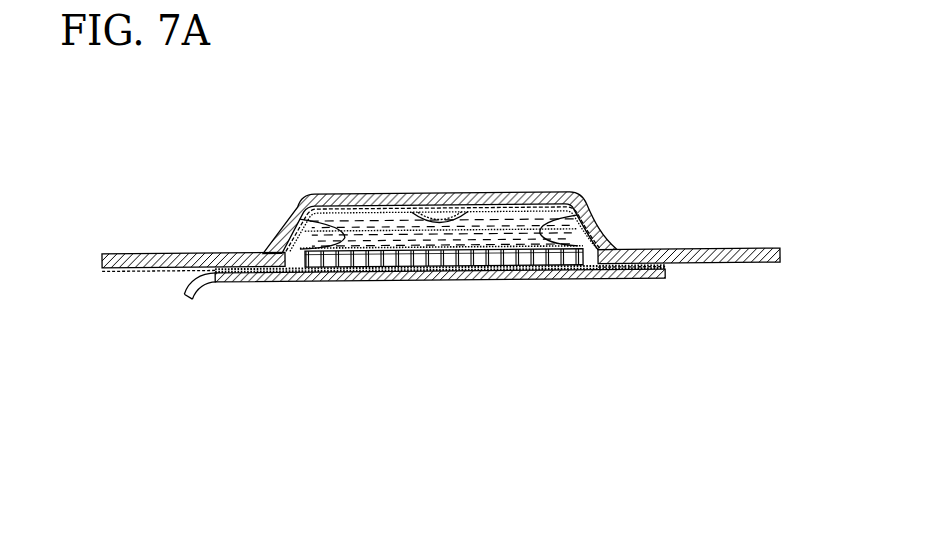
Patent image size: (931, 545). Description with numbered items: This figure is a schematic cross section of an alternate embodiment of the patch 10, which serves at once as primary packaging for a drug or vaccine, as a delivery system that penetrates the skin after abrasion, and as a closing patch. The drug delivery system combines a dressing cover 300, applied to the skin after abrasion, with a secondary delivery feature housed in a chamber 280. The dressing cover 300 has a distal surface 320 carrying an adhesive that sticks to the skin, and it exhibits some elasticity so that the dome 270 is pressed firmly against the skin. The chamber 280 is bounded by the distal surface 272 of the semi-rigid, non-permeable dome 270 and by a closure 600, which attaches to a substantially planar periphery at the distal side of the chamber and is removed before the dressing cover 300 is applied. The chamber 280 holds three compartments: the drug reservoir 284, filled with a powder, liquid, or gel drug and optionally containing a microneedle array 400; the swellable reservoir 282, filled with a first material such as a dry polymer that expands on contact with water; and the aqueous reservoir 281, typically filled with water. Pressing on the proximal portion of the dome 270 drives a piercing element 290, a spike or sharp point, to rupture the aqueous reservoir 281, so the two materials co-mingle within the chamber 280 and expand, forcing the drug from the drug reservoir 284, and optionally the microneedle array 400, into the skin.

The patch 10 is at (639, 150).
The dressing cover 300 is at (727, 247).
The distal surface 320 is at (132, 272).
The chamber 280 is at (291, 233).
The aqueous reservoir 281 is at (367, 223).
The swellable reservoir 282 is at (520, 237).
The piercing element 290 is at (437, 214).
The microneedle array 400 is at (418, 280).
The distal surface 272 is at (543, 274).
The drug reservoir 284 is at (582, 276).
The dome 270 is at (667, 267).
The closure 600 is at (184, 294).